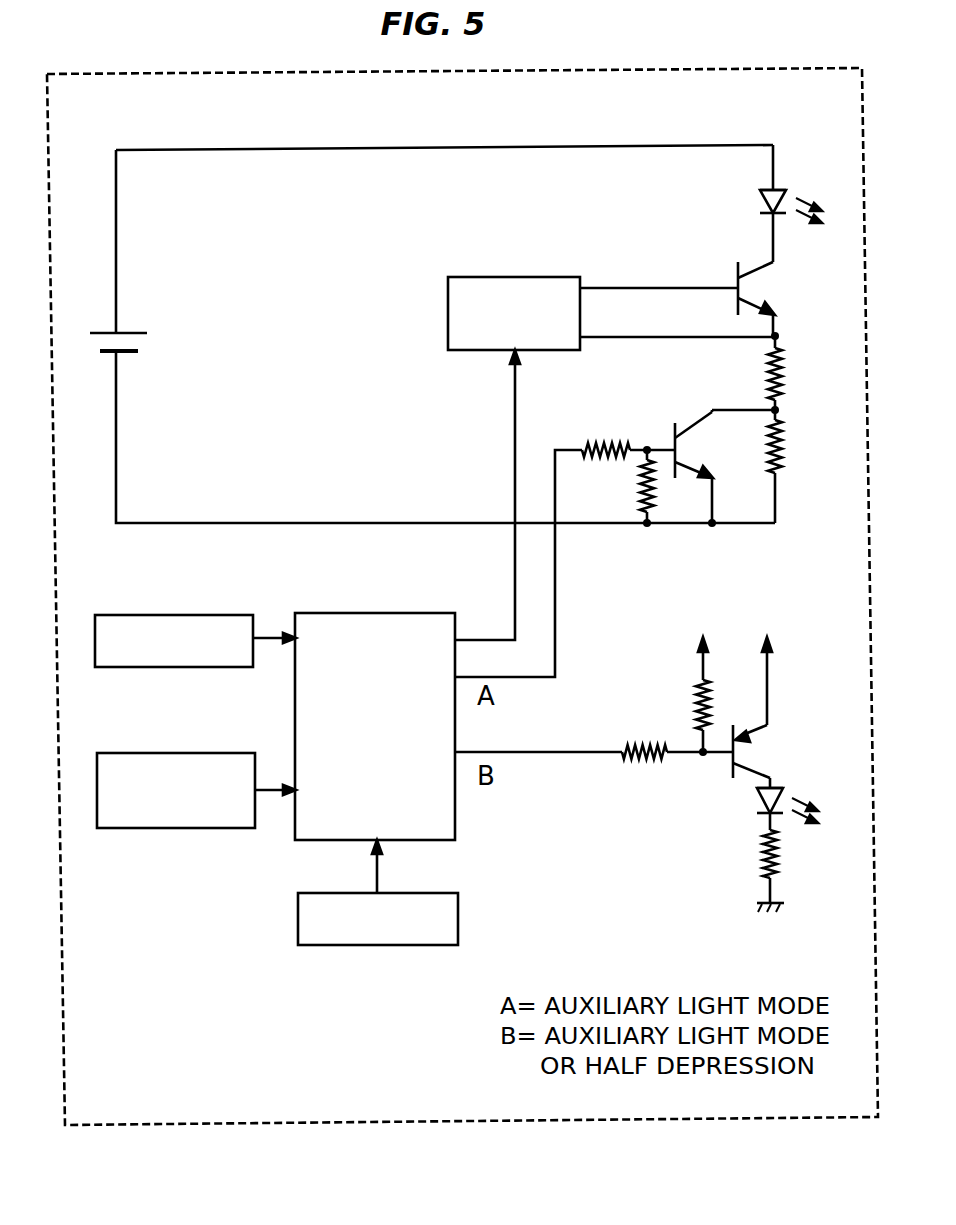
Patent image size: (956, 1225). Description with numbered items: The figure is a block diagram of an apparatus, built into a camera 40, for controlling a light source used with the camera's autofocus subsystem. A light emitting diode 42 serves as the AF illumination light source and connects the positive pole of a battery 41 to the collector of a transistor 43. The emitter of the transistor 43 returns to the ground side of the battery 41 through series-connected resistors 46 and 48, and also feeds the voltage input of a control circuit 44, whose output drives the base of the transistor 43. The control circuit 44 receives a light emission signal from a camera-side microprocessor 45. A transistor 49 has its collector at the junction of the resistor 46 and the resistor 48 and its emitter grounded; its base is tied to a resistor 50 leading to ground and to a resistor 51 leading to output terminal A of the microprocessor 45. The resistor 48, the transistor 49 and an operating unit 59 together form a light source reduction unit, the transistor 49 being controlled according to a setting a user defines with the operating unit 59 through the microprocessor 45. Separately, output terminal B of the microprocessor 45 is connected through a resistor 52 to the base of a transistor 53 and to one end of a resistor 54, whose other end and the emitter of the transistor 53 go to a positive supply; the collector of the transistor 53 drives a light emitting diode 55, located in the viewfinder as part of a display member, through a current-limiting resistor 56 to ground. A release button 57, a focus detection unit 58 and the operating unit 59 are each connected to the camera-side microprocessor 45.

The camera 40 is at (199, 109).
The battery 41 is at (147, 347).
The light emitting diode 42 is at (742, 209).
The transistor 43 is at (790, 287).
The control circuit 44 is at (511, 277).
The camera-side microprocessor 45 is at (372, 613).
The resistor 46 is at (790, 371).
The resistor 48 is at (790, 448).
The transistor 49 is at (690, 448).
The resistor 50 is at (675, 497).
The resistor 51 is at (605, 434).
The resistor 52 is at (650, 766).
The transistor 53 is at (770, 748).
The resistor 54 is at (686, 713).
The light emitting diode 55 is at (742, 800).
The current-limiting resistor 56 is at (742, 855).
The release button 57 is at (375, 946).
The focus detection unit 58 is at (178, 829).
The operating unit 59 is at (174, 614).